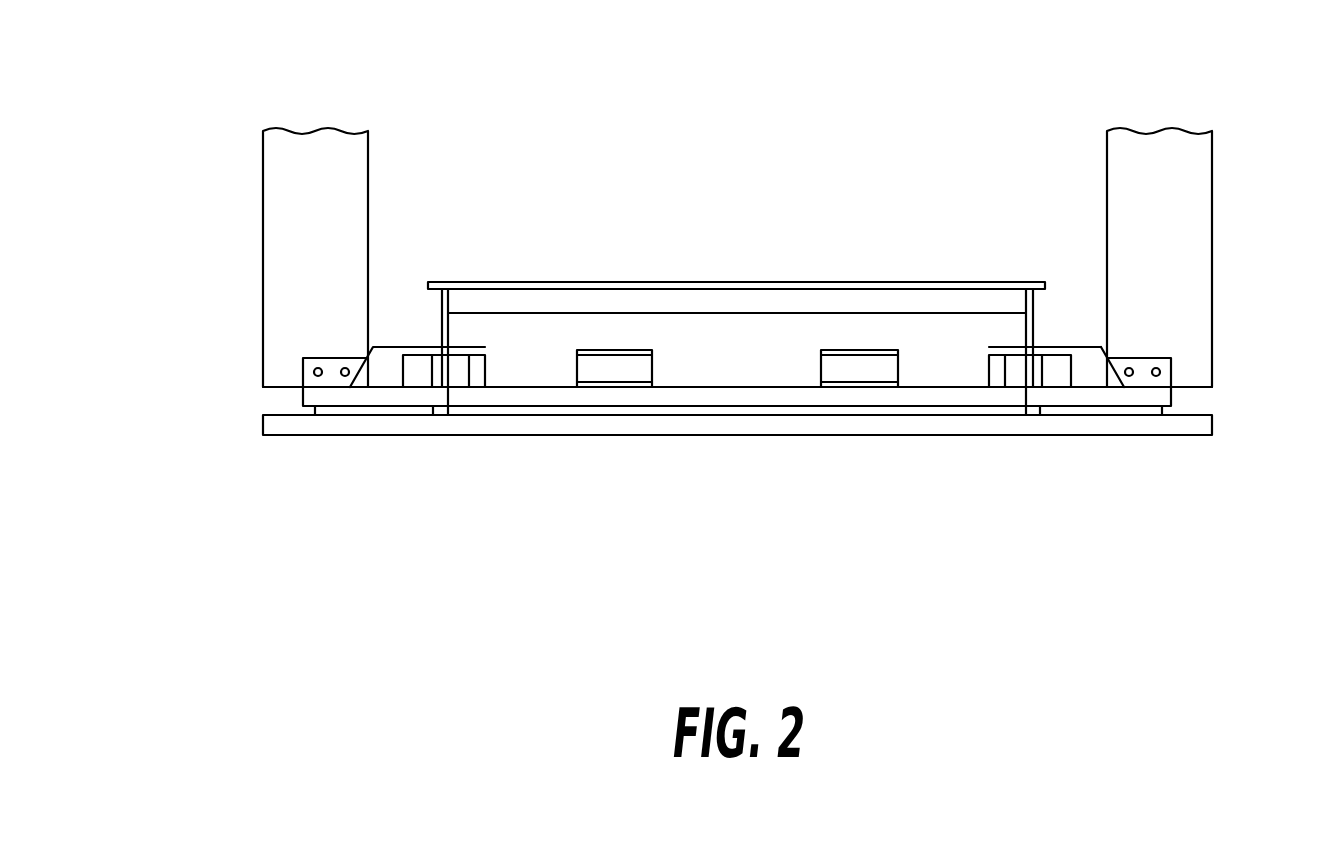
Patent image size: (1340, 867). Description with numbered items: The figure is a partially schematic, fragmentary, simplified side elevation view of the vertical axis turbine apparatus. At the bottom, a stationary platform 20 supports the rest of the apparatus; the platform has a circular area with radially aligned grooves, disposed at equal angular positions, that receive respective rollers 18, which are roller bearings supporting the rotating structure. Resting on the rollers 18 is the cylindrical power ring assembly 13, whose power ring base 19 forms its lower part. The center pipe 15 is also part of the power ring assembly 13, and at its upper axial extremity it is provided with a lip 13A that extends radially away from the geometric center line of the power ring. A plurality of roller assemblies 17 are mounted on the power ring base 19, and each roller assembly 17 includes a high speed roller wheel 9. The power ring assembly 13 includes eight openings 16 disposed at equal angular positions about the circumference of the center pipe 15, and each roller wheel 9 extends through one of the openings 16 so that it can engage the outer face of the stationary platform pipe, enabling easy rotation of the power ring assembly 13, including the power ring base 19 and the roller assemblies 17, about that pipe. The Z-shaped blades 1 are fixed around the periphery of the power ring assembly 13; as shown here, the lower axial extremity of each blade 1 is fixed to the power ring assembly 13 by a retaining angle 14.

The Z-shaped blade 1 is at (260, 137).
The roller wheel 9 is at (987, 368).
The power ring assembly 13 is at (587, 282).
The lip 13A is at (993, 281).
The retaining angle 14 is at (302, 357).
The center pipe 15 is at (523, 342).
The opening 16 is at (857, 347).
The roller assembly 17 is at (1107, 345).
The roller 18 is at (1162, 408).
The power ring base 19 is at (302, 395).
The stationary platform 20 is at (262, 423).